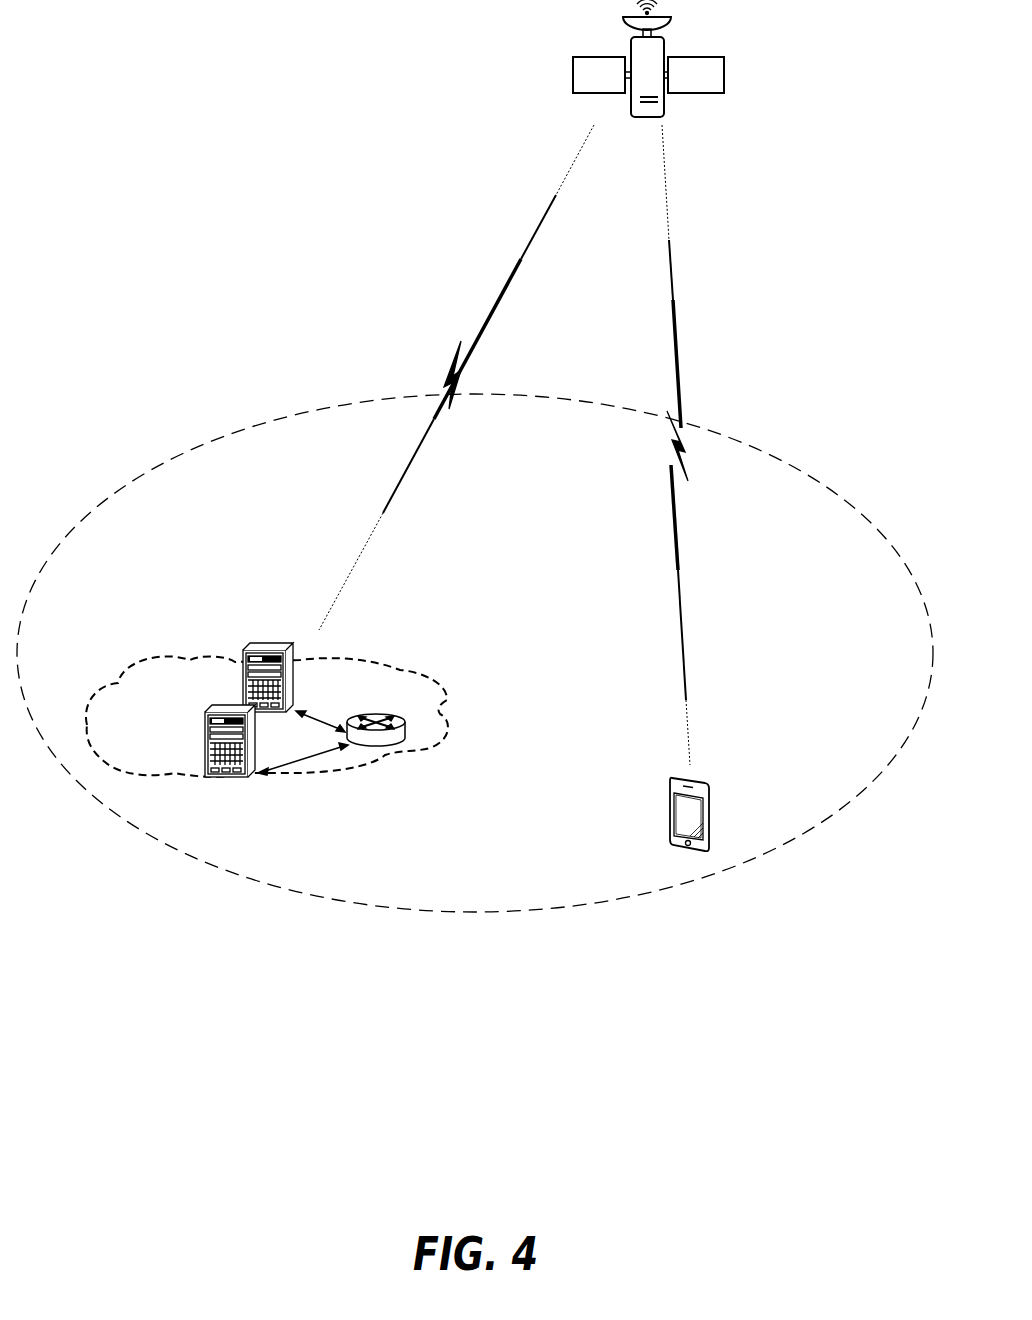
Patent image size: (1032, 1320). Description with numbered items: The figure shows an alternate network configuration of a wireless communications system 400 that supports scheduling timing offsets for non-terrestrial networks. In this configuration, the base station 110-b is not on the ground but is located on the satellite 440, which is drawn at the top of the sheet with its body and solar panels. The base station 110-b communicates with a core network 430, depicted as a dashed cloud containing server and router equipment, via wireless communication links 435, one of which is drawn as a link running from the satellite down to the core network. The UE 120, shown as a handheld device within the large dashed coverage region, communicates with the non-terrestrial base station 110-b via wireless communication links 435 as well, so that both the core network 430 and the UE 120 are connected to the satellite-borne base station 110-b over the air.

The wireless communications system 400 is at (246, 74).
The base station 110-b is at (663, 110).
The satellite 440 is at (729, 80).
The wireless communication links 435 is at (487, 322).
The core network 430 is at (169, 774).
The UE 120 is at (690, 847).